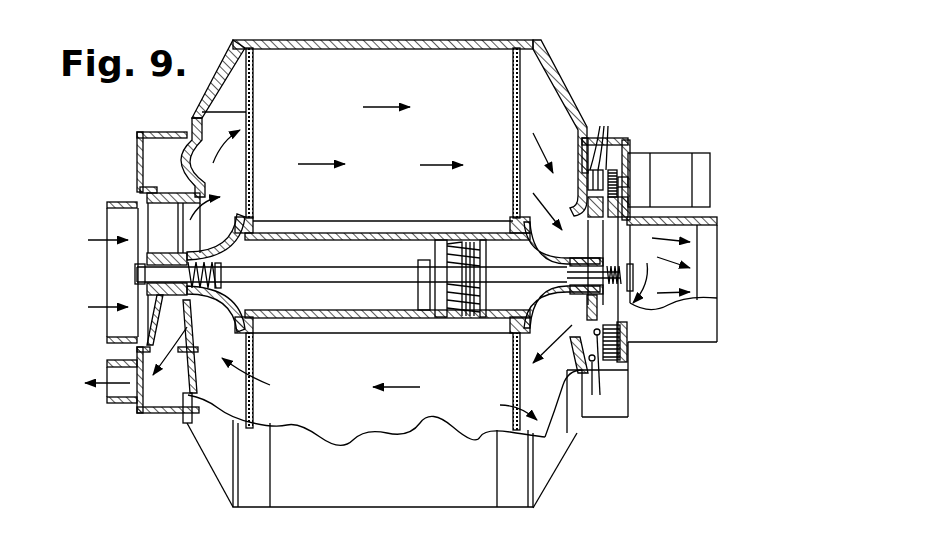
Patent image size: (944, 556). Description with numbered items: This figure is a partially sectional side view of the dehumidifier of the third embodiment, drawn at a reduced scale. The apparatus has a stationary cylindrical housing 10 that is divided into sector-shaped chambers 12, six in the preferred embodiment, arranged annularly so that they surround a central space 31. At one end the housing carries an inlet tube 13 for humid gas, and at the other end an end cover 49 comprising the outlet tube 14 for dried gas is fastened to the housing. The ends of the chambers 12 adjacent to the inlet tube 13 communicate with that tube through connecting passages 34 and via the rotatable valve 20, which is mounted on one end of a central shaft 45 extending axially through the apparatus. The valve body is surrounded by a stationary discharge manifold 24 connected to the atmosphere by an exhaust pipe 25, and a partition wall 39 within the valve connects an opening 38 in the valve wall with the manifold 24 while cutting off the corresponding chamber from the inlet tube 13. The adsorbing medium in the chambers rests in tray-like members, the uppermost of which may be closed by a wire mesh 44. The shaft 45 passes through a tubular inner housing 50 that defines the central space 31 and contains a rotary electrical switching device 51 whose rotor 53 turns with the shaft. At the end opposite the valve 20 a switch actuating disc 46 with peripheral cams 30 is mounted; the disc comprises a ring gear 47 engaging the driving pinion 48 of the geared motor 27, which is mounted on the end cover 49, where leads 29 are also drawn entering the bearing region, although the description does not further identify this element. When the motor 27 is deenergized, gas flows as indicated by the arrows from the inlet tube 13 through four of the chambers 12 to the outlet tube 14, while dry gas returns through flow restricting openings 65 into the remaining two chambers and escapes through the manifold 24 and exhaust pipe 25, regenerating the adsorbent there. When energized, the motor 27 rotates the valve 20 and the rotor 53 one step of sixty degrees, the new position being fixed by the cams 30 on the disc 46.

The housing 10 is at (325, 505).
The chambers 12 is at (524, 68).
The inlet tube 13 is at (107, 206).
The outlet tube 14 is at (693, 342).
The rotatable valve 20 is at (162, 215).
The discharge manifold 24 is at (137, 135).
The exhaust pipe 25 is at (107, 365).
The driving motor 27 is at (682, 153).
The electrical leads 29 is at (608, 135).
The switch actuating projections or cams 30 is at (608, 392).
The central space 31 is at (370, 253).
The connecting passages 34 is at (192, 120).
The opening 38 is at (153, 355).
The partition wall 39 is at (150, 325).
The wire mesh 44 is at (256, 93).
The central shaft 45 is at (313, 275).
The switch actuating disc 46 is at (600, 362).
The ring gear 47 is at (595, 315).
The driving pinion 48 is at (628, 143).
The end cover 49 is at (627, 147).
The tubular inner housing 50 is at (311, 316).
The rotary electrical switching device 51 is at (458, 313).
The rotor 53 is at (415, 297).
The flow restricting openings 65 is at (625, 343).